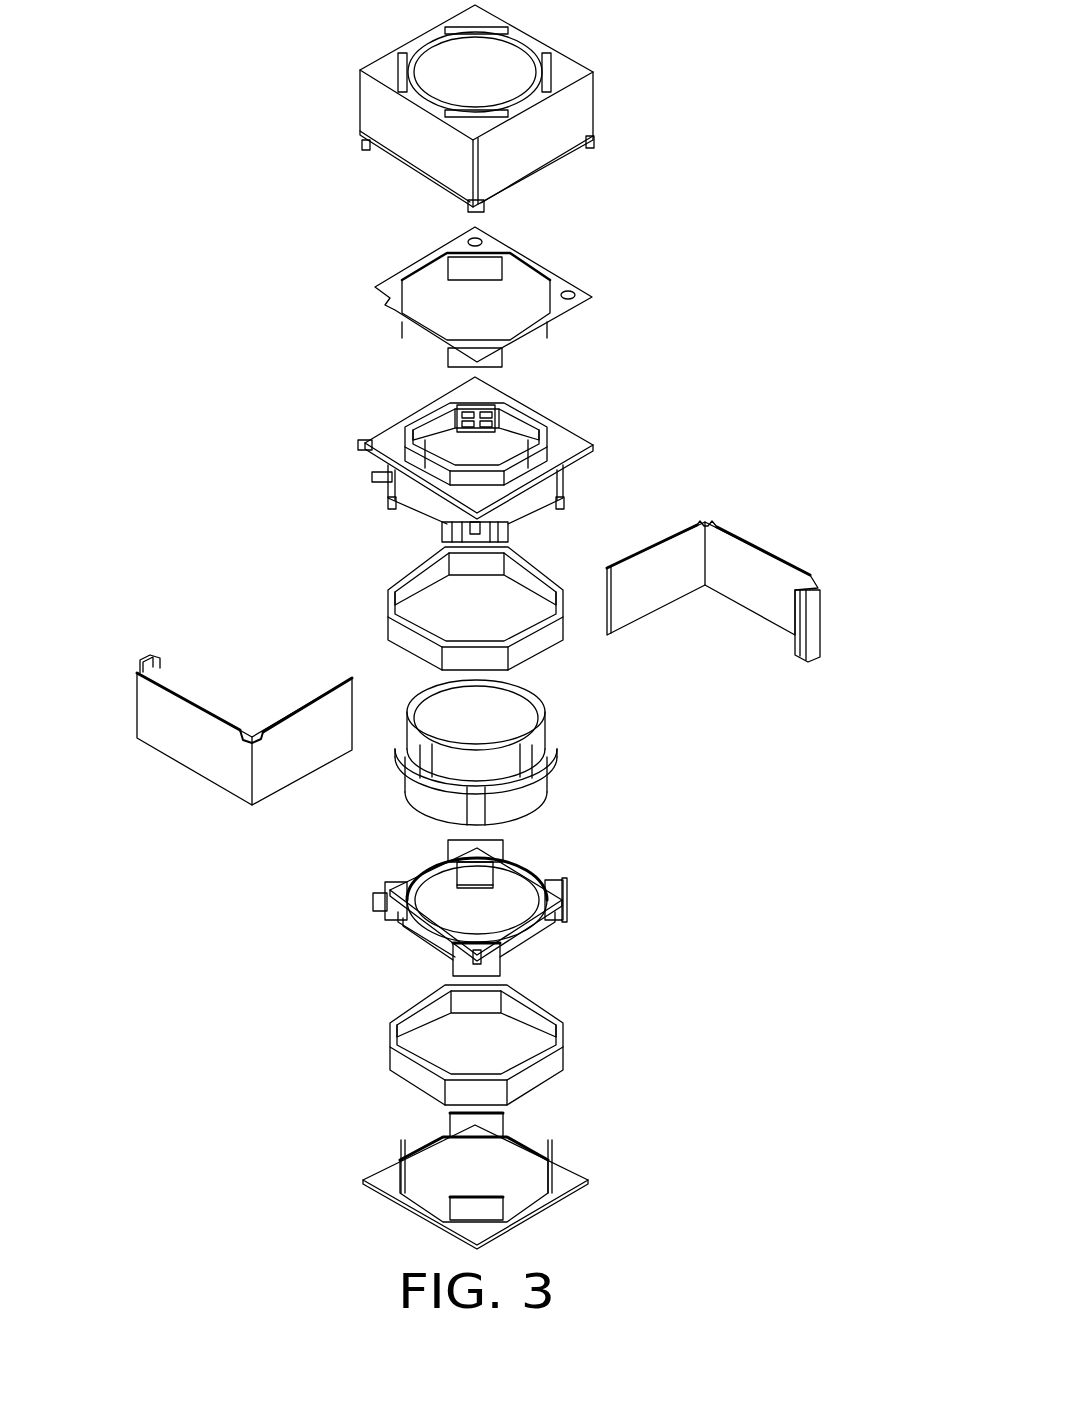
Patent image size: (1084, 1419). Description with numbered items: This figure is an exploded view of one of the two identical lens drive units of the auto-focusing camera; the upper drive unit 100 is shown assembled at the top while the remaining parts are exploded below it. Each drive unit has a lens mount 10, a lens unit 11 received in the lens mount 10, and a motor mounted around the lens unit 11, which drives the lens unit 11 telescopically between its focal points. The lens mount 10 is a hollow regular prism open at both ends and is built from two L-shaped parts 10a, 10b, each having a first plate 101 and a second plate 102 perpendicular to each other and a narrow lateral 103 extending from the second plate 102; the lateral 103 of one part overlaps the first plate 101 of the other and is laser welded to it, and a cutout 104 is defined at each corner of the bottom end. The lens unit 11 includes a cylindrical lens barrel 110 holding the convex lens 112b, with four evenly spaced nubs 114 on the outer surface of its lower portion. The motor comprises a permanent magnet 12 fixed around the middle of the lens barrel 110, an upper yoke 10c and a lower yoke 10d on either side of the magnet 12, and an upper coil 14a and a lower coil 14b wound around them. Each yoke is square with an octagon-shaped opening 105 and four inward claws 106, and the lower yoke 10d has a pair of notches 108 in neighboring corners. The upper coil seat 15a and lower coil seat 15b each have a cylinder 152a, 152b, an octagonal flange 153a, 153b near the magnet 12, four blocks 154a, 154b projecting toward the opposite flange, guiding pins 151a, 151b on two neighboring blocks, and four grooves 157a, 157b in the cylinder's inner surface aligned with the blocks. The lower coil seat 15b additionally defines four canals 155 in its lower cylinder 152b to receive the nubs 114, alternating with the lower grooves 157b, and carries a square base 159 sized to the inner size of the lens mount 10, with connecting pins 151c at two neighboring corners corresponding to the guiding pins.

The upper drive unit 100 is at (524, 108).
The lens mount 10 is at (562, 127).
The lens unit 11 is at (497, 72).
The lower yoke 10d is at (473, 293).
The octagon-shaped opening 105 is at (432, 295).
The notches 108 is at (380, 307).
The lower coil seat 15b is at (468, 459).
The canals 155 is at (413, 410).
The lower grooves 157b is at (472, 420).
The base 159 is at (558, 442).
The connecting pins 151c is at (362, 445).
The guiding pins 151b is at (372, 477).
The lower cylinder 152b is at (543, 483).
The lower flange 153b is at (392, 502).
The blocks 154b is at (442, 528).
The lower coil 14b is at (407, 635).
The L-shaped part 10b is at (754, 570).
The first plate 101 is at (648, 587).
The second plate 102 is at (762, 588).
The lateral 103 is at (812, 628).
The cutout 104 is at (707, 522).
The lens 112b is at (498, 750).
The nubs 114 is at (428, 765).
The permanent magnet 12 is at (550, 770).
The lens barrel 110 is at (525, 802).
The L-shaped part 10a is at (200, 732).
The upper coil seat 15a is at (469, 901).
The upper flange 153a is at (417, 870).
The upper grooves 157a is at (473, 875).
The guiding pins 151a is at (375, 902).
The blocks 154a is at (567, 898).
The upper cylinder 152a is at (423, 948).
The upper coil 14a is at (538, 1073).
The upper yoke 10c is at (468, 1166).
The claws 106 is at (483, 1207).